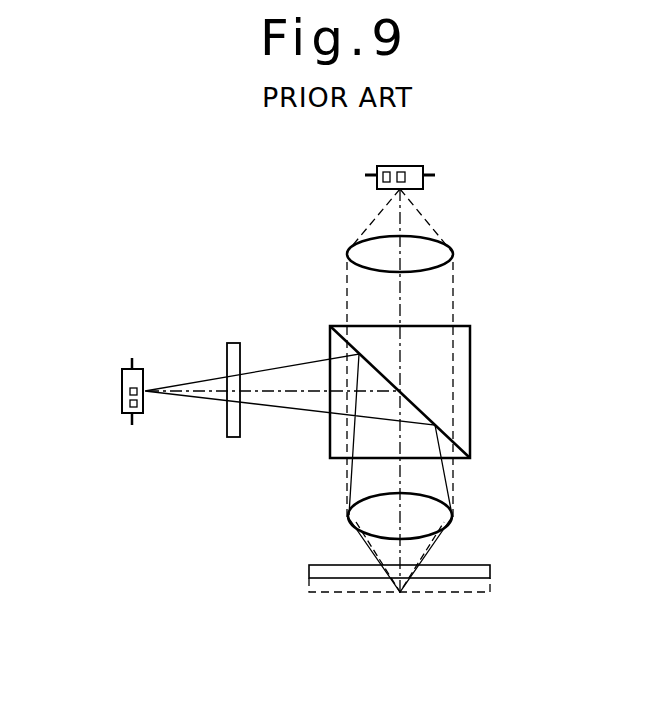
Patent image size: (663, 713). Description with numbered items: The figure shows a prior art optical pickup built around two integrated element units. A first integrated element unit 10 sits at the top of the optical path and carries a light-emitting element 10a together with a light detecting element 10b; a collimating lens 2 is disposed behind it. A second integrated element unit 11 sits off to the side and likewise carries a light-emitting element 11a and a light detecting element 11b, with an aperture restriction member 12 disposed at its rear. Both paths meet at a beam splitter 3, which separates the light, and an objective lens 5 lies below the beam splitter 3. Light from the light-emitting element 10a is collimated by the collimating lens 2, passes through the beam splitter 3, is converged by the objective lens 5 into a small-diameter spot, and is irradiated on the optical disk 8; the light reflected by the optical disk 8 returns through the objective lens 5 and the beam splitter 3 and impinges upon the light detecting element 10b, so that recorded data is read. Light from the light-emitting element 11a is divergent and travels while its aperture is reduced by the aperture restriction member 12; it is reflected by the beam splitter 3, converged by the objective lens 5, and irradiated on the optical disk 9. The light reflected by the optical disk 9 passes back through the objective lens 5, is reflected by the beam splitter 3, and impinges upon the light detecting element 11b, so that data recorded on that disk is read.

The collimating lens 2 is at (440, 256).
The beam splitter 3 is at (462, 388).
The objective lens 5 is at (435, 520).
The optical disk 8 is at (472, 565).
The optical disk 9 is at (492, 592).
The first integrated element unit 10 is at (421, 185).
The light-emitting element 10a is at (403, 172).
The light detecting element 10b is at (387, 173).
The second integrated element unit 11 is at (128, 370).
The light-emitting element 11a is at (129, 390).
The light detecting element 11b is at (123, 405).
The aperture restriction member 12 is at (233, 348).